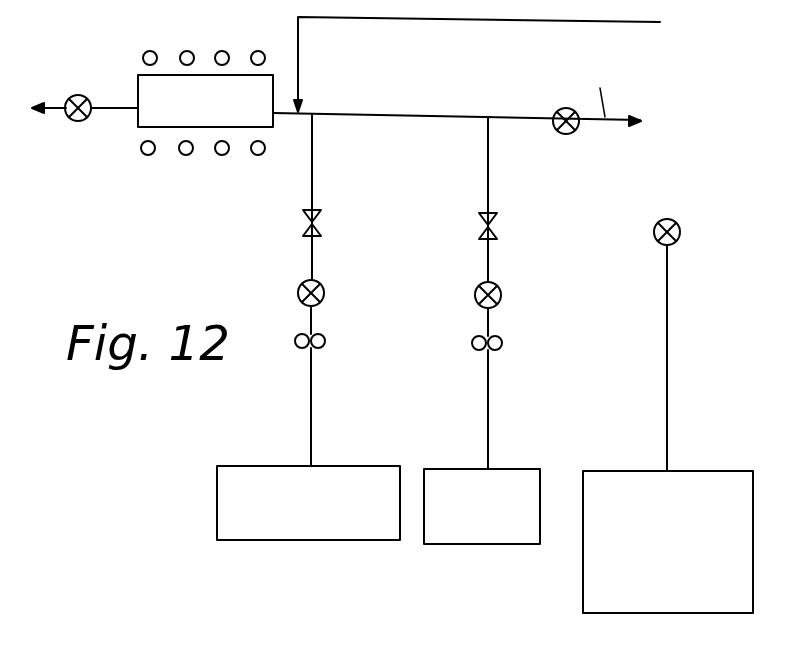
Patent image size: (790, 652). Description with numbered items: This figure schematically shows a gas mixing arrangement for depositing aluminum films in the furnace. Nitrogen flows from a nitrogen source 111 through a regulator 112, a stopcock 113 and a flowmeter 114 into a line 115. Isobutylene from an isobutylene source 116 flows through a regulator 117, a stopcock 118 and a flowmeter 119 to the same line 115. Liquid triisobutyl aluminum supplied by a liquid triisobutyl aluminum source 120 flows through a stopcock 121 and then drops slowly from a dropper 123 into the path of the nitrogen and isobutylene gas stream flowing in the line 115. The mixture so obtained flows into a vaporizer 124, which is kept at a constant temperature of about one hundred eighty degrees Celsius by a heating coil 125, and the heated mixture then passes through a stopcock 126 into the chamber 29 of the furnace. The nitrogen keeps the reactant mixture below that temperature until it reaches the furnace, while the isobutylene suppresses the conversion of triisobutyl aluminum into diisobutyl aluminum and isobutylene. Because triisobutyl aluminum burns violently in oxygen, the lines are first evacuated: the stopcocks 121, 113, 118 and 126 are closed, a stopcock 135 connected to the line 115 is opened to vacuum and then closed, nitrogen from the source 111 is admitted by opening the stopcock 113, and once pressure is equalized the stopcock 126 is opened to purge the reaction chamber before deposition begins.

The chamber 29 is at (55, 112).
The nitrogen source 111 is at (514, 469).
The regulator 112 is at (503, 343).
The stopcock 113 is at (501, 295).
The flowmeter 114 is at (490, 227).
The line 115 is at (391, 116).
The isobutylene source 116 is at (354, 466).
The regulator 117 is at (325, 341).
The stopcock 118 is at (324, 293).
The flowmeter 119 is at (313, 222).
The liquid triisobutyl aluminum source 120 is at (707, 471).
The stopcock 121 is at (681, 232).
The dropper 123 is at (303, 106).
The vaporizer 124 is at (138, 86).
The heating coil 125 is at (222, 51).
The stopcock 126 is at (75, 93).
The stopcock 135 is at (557, 110).